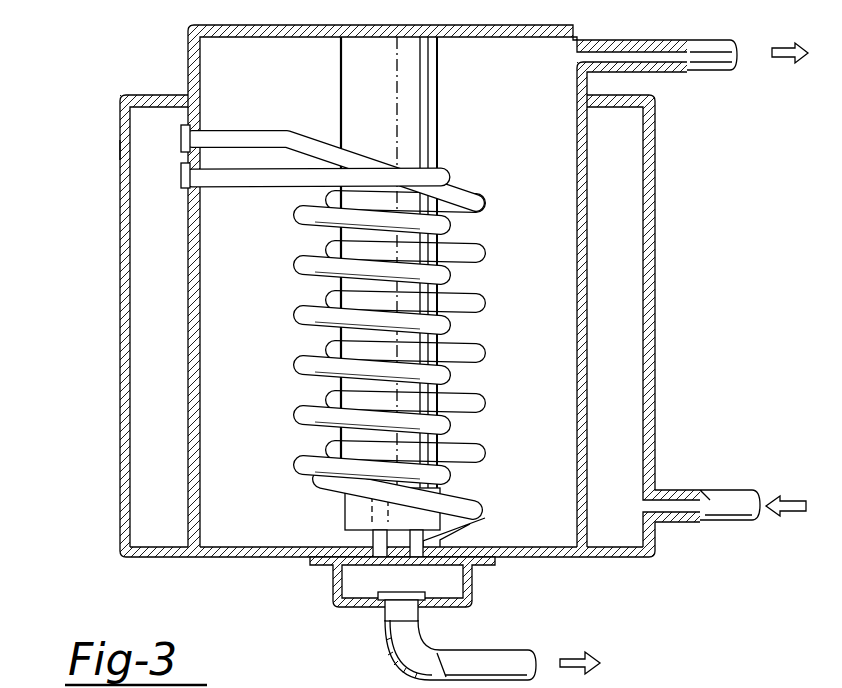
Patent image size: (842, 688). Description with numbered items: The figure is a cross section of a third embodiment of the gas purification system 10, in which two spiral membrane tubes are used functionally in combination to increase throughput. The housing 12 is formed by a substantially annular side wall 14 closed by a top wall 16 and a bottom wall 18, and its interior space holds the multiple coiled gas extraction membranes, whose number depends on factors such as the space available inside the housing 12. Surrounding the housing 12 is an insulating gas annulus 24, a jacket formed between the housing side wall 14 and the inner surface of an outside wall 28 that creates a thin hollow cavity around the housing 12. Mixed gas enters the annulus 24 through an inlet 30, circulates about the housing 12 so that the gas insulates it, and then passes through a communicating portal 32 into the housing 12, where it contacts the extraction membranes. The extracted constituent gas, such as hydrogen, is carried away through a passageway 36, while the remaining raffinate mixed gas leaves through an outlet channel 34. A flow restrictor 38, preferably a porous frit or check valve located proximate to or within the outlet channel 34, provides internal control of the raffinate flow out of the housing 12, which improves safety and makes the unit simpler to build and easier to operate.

The gas purification system 10 is at (662, 302).
The housing 12 is at (188, 483).
The side wall 14 is at (188, 378).
The top wall 16 is at (517, 37).
The bottom wall 18 is at (520, 547).
The insulating gas annulus 24 is at (170, 280).
The outside wall 28 is at (120, 150).
The inlet 30 is at (722, 490).
The communicating portal 32 is at (237, 177).
The outlet channel 34 is at (508, 663).
The passageway 36 is at (660, 62).
The flow restrictor 38 is at (385, 652).